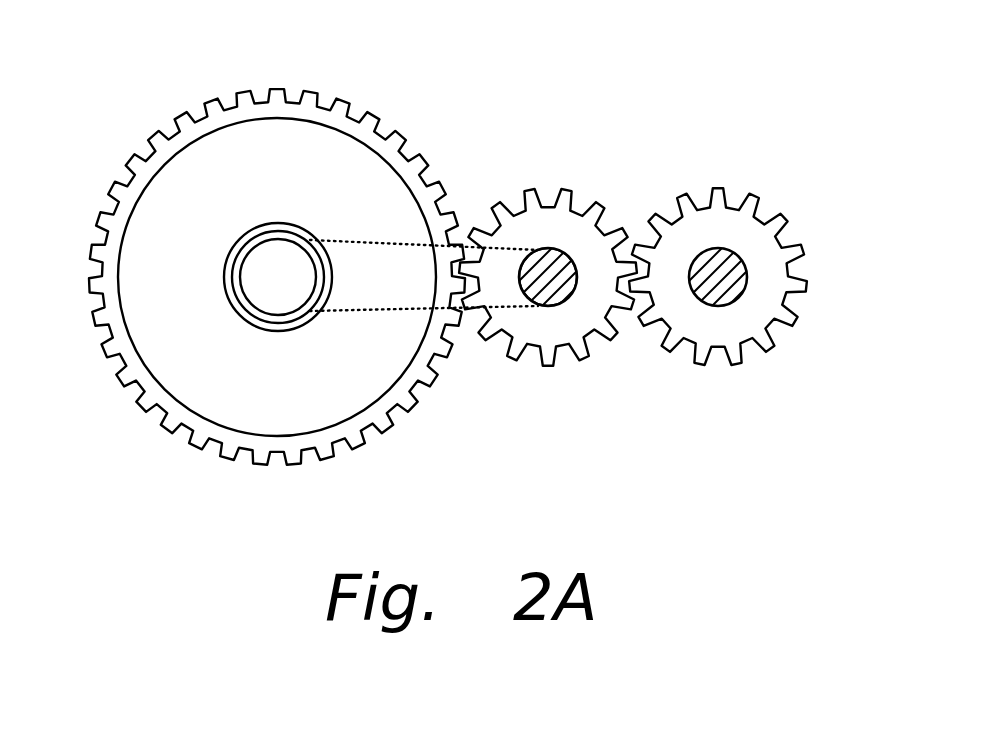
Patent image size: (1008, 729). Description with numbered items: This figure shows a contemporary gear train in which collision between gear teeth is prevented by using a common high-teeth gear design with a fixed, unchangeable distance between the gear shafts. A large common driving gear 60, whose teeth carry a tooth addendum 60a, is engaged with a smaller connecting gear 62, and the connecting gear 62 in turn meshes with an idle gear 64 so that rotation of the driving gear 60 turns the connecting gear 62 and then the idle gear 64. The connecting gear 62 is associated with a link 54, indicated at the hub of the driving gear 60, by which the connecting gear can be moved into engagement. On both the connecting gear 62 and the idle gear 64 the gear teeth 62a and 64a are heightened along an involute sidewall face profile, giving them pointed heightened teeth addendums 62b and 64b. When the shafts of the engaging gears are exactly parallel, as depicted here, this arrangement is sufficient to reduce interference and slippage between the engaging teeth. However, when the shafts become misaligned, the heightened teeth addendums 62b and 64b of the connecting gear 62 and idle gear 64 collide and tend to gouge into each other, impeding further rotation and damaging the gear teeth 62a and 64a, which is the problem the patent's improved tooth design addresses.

The driving gear 60 is at (353, 95).
The tooth addendum 60a is at (404, 137).
The link 54 is at (382, 290).
The connecting gear 62 is at (568, 180).
The gear teeth 62a is at (583, 345).
The heightened teeth addendums 62b is at (497, 198).
The idle gear 64 is at (790, 208).
The gear teeth 64a is at (770, 335).
The heightened teeth addendums 64b is at (715, 189).